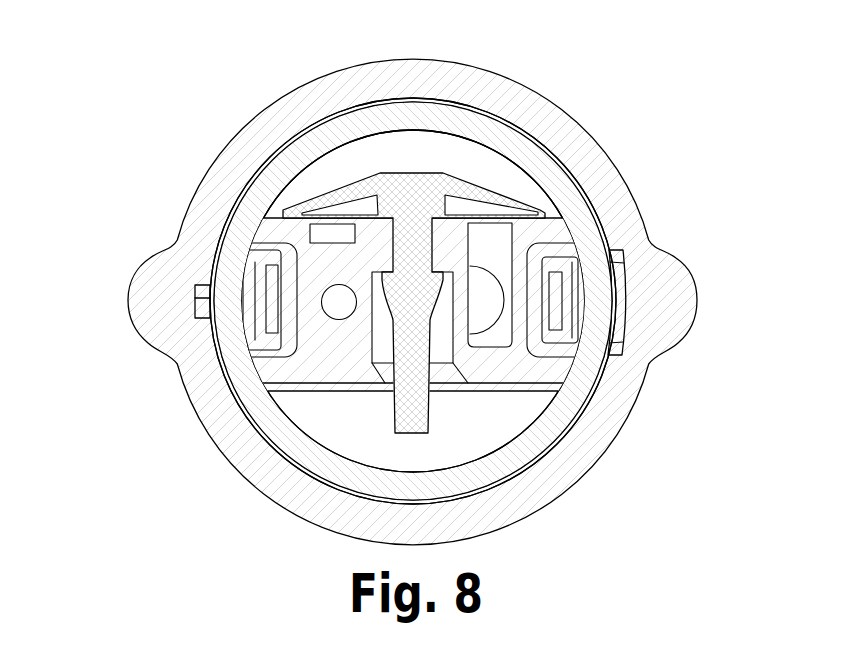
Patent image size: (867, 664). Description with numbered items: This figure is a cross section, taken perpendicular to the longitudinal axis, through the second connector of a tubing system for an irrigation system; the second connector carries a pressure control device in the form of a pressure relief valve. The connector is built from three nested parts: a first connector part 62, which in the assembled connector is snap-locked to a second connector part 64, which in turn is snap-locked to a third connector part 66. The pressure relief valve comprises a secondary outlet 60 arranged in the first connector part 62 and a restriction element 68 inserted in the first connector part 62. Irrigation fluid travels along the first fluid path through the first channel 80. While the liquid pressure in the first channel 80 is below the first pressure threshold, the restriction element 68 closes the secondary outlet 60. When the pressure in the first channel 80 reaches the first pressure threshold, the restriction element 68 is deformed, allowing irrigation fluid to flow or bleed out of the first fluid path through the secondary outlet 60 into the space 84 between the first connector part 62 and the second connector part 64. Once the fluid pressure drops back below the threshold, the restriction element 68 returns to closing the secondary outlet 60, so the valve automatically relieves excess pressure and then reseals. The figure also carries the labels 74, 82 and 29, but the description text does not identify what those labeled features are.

The secondary outlet 60 is at (372, 272).
The first connector part 62 is at (409, 249).
The second connector part 64 is at (323, 140).
The third connector part 66 is at (203, 227).
The restriction element 68 is at (408, 196).
The passage 74 is at (332, 297).
The first channel 80 is at (586, 220).
The hole 82 is at (242, 211).
The space 84 is at (425, 155).
The opening 29 is at (480, 222).